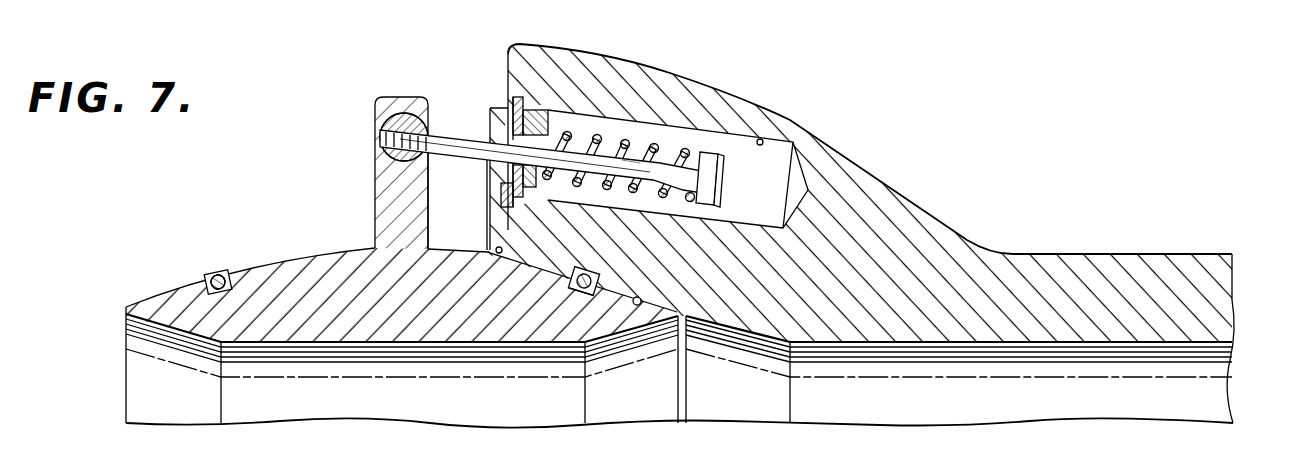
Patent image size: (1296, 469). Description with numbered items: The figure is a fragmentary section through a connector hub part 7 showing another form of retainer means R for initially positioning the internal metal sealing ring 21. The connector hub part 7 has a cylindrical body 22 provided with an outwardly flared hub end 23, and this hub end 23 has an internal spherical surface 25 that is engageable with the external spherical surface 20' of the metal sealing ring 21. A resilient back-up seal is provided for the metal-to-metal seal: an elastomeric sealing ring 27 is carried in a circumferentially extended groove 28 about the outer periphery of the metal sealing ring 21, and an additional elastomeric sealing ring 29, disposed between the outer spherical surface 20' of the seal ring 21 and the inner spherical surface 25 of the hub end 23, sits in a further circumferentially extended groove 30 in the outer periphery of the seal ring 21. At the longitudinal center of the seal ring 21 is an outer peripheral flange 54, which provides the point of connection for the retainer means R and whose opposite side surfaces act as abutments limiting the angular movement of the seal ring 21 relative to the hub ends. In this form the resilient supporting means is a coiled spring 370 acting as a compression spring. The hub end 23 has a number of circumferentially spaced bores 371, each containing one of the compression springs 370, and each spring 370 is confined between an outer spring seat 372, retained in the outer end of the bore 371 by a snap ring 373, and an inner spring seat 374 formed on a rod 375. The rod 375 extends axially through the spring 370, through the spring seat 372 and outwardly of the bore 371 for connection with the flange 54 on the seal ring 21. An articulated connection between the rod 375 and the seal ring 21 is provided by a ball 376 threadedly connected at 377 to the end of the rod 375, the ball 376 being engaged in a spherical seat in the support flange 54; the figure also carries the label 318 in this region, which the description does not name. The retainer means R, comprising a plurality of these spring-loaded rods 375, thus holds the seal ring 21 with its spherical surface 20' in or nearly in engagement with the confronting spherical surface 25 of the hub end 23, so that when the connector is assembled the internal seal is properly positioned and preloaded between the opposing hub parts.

The connector hub part 7 is at (1188, 255).
The metal sealing ring 21 is at (405, 331).
The cylindrical body 22 is at (1118, 270).
The hub end 23 is at (680, 85).
The internal spherical surface 25 is at (639, 297).
The elastomeric sealing ring 27 is at (219, 273).
The groove 28 is at (207, 275).
The additional elastomeric sealing ring 29 is at (588, 272).
The groove 30 is at (577, 296).
The outer peripheral flange 54 is at (385, 208).
The external spherical surface 20' is at (497, 284).
The pocket 318 is at (428, 188).
The coiled spring 370 is at (598, 132).
The bore 371 is at (760, 140).
The outer spring seat 372 is at (540, 108).
The snap ring 373 is at (515, 100).
The inner spring seat 374 is at (720, 183).
The rod 375 is at (622, 168).
The ball 376 is at (399, 112).
The threaded connection 377 is at (378, 147).
The retainer means R is at (452, 118).